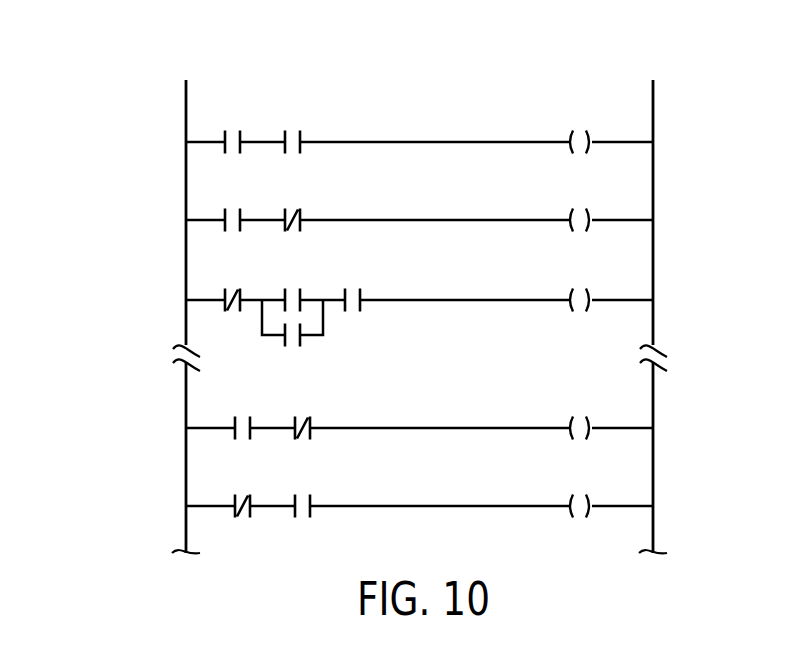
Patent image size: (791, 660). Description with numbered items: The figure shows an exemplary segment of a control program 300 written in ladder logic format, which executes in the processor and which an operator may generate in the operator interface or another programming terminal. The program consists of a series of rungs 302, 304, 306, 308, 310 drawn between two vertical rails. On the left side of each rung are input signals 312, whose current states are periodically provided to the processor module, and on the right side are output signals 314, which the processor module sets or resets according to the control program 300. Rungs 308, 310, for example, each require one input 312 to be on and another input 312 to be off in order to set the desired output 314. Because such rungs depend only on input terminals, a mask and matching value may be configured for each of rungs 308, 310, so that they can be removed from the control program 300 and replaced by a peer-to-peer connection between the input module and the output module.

The control program 300 is at (133, 71).
The rung 302 is at (376, 160).
The rung 304 is at (376, 238).
The rung 306 is at (376, 319).
The rung 308 is at (376, 446).
The rung 310 is at (376, 524).
The input signals 312 is at (315, 122).
The output signals 314 is at (618, 122).